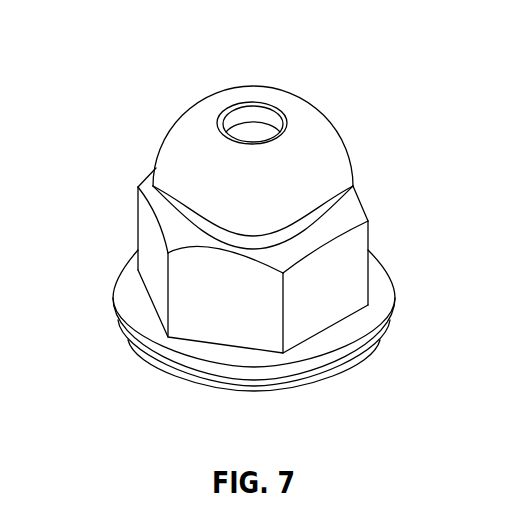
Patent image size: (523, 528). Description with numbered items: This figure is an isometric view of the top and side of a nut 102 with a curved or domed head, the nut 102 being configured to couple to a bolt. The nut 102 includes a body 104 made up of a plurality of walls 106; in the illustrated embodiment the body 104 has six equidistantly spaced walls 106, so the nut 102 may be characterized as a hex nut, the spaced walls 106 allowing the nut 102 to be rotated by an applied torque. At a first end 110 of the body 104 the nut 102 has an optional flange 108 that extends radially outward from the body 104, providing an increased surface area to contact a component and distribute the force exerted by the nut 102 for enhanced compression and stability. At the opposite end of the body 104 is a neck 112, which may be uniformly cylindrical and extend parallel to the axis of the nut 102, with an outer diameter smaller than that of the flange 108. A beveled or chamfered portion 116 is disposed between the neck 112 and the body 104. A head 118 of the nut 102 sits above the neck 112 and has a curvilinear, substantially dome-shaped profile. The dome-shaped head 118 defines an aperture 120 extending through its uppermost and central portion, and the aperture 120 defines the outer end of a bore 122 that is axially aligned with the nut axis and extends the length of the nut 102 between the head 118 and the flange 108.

The nut 102 is at (132, 138).
The body 104 is at (135, 272).
The walls 106 is at (195, 303).
The flange 108 is at (377, 298).
The first end 110 is at (220, 340).
The neck 112 is at (337, 213).
The beveled or chamfered portion 116 is at (176, 243).
The head 118 is at (307, 131).
The aperture 120 is at (221, 106).
The bore 122 is at (252, 118).